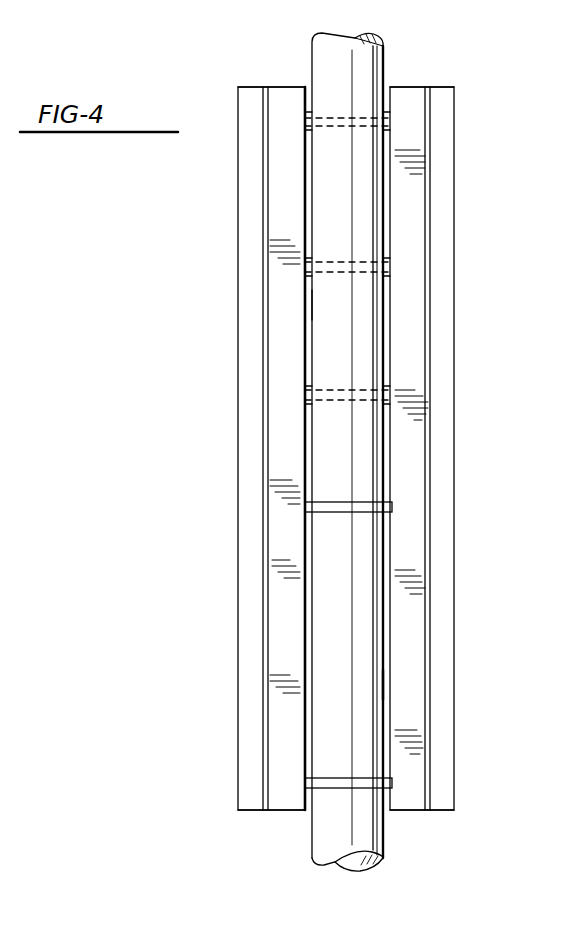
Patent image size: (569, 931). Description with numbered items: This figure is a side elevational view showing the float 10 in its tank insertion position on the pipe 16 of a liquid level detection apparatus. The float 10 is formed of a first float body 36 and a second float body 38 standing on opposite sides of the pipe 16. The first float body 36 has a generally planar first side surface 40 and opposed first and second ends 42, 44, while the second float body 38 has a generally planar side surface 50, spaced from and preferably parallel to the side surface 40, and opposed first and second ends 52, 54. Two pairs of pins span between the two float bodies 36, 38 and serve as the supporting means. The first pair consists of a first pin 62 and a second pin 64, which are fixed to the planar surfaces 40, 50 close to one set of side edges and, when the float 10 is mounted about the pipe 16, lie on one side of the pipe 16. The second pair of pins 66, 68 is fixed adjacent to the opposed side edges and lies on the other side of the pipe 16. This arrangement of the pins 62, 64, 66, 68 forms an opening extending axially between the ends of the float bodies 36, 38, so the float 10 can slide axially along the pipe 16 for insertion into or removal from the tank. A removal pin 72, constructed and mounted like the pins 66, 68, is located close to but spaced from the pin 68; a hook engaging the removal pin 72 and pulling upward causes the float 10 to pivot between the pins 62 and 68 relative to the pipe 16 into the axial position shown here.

The float 10 is at (178, 492).
The pipe 16 is at (362, 620).
The first float body 36 is at (238, 338).
The second float body 38 is at (437, 410).
The first side surface 40 is at (312, 313).
The first end 42 is at (262, 84).
The second end 44 is at (265, 810).
The side surface 50 is at (388, 678).
The first end 52 is at (410, 86).
The second end 54 is at (410, 812).
The first pin 62 is at (392, 538).
The second pin 64 is at (364, 782).
The pin 66 is at (362, 118).
The pin 68 is at (345, 400).
The removal pin 72 is at (358, 262).